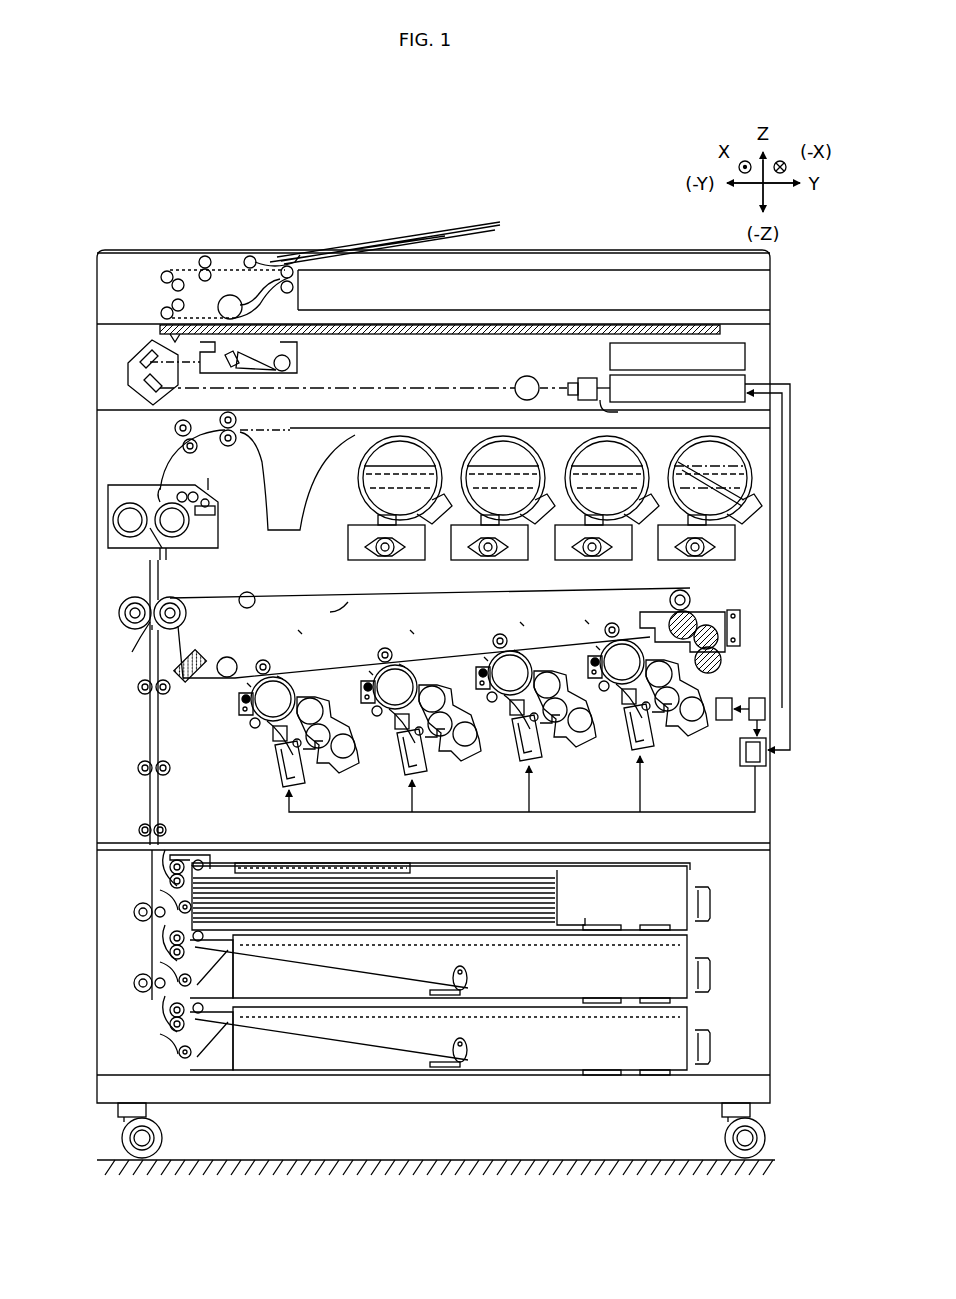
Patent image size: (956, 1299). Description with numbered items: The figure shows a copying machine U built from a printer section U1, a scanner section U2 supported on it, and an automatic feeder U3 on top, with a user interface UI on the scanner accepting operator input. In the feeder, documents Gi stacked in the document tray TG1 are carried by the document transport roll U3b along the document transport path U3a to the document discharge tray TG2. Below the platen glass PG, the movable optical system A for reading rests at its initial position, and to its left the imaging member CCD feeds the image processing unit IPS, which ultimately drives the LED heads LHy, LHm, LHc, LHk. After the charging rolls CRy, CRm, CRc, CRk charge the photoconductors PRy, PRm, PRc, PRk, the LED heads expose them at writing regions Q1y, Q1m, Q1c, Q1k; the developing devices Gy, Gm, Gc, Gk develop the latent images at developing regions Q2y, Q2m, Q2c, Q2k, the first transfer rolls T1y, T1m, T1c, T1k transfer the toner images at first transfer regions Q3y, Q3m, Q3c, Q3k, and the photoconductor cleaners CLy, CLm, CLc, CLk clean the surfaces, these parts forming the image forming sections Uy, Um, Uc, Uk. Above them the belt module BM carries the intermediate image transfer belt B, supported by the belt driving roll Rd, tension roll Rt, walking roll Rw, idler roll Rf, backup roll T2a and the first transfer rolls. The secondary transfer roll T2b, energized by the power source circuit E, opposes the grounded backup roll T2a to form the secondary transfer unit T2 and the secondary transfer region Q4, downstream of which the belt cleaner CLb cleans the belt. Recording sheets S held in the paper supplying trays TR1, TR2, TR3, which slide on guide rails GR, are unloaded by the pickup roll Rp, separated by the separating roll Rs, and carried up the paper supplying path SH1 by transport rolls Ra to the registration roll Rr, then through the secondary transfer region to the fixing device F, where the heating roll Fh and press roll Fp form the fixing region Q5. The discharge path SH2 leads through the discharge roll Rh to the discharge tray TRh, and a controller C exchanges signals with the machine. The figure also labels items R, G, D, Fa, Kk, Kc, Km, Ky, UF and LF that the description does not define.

The copying machine U is at (112, 200).
The automatic feeder U3 is at (100, 292).
The document transport path U3a is at (180, 270).
The document transport roll U3b is at (163, 310).
The documents Gi is at (352, 250).
The document tray TG1 is at (520, 226).
The document discharge tray TG2 is at (534, 290).
The scanner section U2 is at (100, 382).
The optical system for reading A is at (135, 352).
The platen glass PG is at (435, 334).
The imaging member CCD is at (535, 378).
The lens R is at (584, 380).
The sensor unit G is at (594, 378).
The user interface UI is at (666, 367).
The image processing unit IPS is at (661, 400).
The intermediate image transfer belt B is at (480, 514).
The printer section U1 is at (100, 434).
The discharge path SH2 is at (164, 436).
The discharge roll Rh is at (230, 448).
The discharge tray TRh is at (326, 478).
The press roll Fp is at (130, 504).
The driving circuit / fixing region D is at (454, 621).
The fixing sensor Fa is at (206, 498).
The heating roll Fh is at (186, 524).
The fixing region Q5 is at (160, 540).
The fixing device F is at (200, 548).
The secondary transfer roll T2b is at (128, 598).
The backup roll T2a is at (172, 598).
The secondary transfer unit T2 is at (124, 630).
The secondary transfer region Q4 is at (129, 652).
The tension roll Rt is at (187, 655).
The idler roll Rf is at (226, 656).
The first transfer roll for K color T1k is at (258, 651).
The developing region for K color Q2k is at (300, 659).
The walking roll Rw is at (255, 600).
The K-color image forming section Uk is at (306, 636).
The belt module BM is at (306, 588).
The belt cleaner CLb is at (666, 610).
The belt driving roll Rd is at (690, 598).
The toner cartridge (K) Kk is at (388, 470).
The toner cartridge (C) Kc is at (491, 470).
The toner cartridge (M) Km is at (593, 470).
The toner cartridge (Y) Ky is at (698, 470).
The C-color image forming section Uc is at (415, 632).
The first transfer roll for C color T1c is at (382, 642).
The developing region for C color Q2c is at (420, 648).
The first transfer region for M color Q3m is at (469, 644).
The first transfer roll for M color T1m is at (497, 628).
The developing region for M color Q2m is at (538, 637).
The M-color image forming section Um is at (526, 626).
The Y-color image forming section Uy is at (586, 624).
The first transfer region for Y color Q3y is at (582, 634).
The first transfer roll for Y color T1y is at (611, 616).
The first transfer region for K color Q3k is at (227, 688).
The first transfer region for C color Q3c is at (344, 680).
The photoconductor for K color PRk is at (273, 699).
The photoconductor for C color PRc is at (395, 687).
The photoconductor for M color PRm is at (510, 673).
The photoconductor for Y color PRy is at (622, 662).
The photoconductor cleaner for K color CLk is at (219, 708).
The photoconductor cleaner for C color CLc is at (354, 703).
The photoconductor cleaner for M color CLm is at (456, 673).
The photoconductor cleaner for Y color CLy is at (569, 663).
The charging roll for K color CRk is at (236, 732).
The charging roll for C color CRc is at (370, 740).
The charging roll for M color CRm is at (495, 725).
The charging roll for Y color CRy is at (607, 717).
The writing region for K color Q1k is at (260, 744).
The writing region for C color Q1c is at (426, 744).
The writing region for M color Q1m is at (543, 736).
The writing region for Y color Q1y is at (652, 722).
The developing device for K color Gk is at (326, 743).
The developing device for C color Gc is at (448, 734).
The developing device for M color Gm is at (563, 714).
The developing device for Y color Gy is at (677, 705).
The LED head for K color LHk is at (282, 760).
The LED head for C color LHc is at (406, 756).
The LED head for M color LHm is at (519, 749).
The LED head for Y color LHy is at (633, 737).
The developing region for Y color Q2y is at (699, 651).
The power source circuit E is at (724, 709).
The controller C is at (749, 717).
The recording sheet S is at (522, 797).
The upper frame UF is at (740, 839).
The lower frame LF is at (741, 871).
The registration roll Rr is at (140, 694).
The transport roll Ra is at (140, 775).
The pickup roll Rp is at (185, 831).
The separating roll Rs is at (165, 876).
The guide rails GR is at (712, 918).
The paper supplying tray TR1 is at (330, 878).
The paper supplying tray TR2 is at (364, 972).
The paper supplying tray TR3 is at (364, 1044).
The paper supplying path SH1 is at (152, 1008).